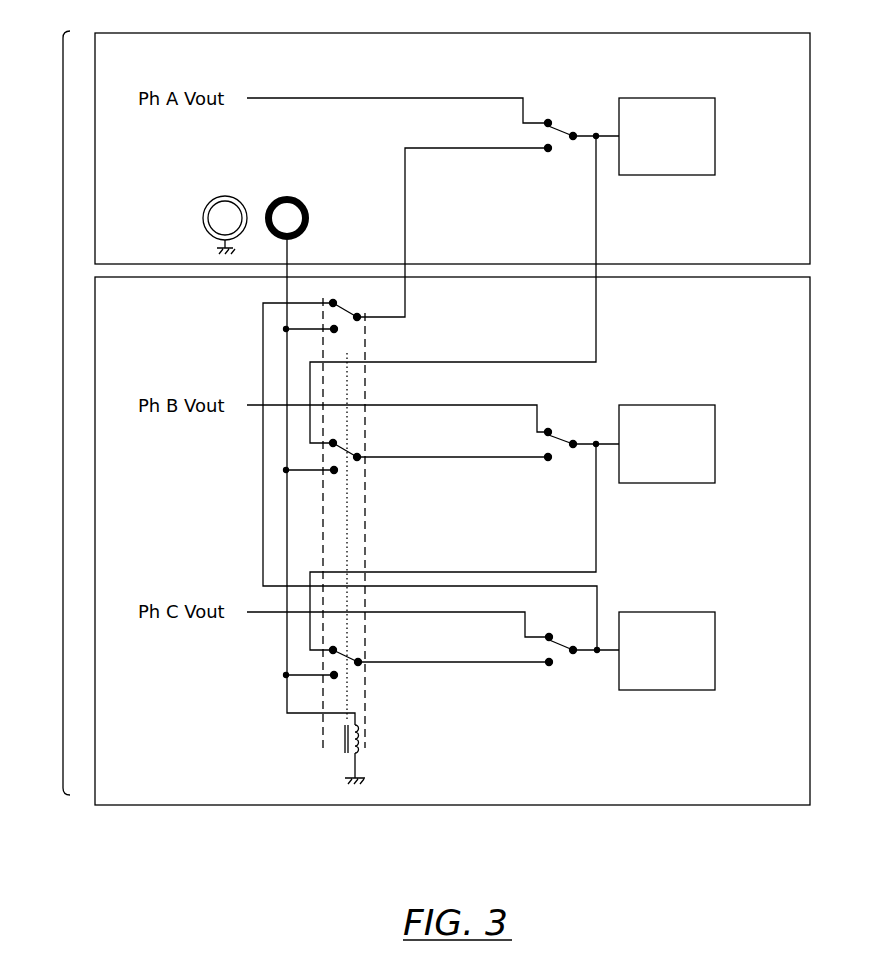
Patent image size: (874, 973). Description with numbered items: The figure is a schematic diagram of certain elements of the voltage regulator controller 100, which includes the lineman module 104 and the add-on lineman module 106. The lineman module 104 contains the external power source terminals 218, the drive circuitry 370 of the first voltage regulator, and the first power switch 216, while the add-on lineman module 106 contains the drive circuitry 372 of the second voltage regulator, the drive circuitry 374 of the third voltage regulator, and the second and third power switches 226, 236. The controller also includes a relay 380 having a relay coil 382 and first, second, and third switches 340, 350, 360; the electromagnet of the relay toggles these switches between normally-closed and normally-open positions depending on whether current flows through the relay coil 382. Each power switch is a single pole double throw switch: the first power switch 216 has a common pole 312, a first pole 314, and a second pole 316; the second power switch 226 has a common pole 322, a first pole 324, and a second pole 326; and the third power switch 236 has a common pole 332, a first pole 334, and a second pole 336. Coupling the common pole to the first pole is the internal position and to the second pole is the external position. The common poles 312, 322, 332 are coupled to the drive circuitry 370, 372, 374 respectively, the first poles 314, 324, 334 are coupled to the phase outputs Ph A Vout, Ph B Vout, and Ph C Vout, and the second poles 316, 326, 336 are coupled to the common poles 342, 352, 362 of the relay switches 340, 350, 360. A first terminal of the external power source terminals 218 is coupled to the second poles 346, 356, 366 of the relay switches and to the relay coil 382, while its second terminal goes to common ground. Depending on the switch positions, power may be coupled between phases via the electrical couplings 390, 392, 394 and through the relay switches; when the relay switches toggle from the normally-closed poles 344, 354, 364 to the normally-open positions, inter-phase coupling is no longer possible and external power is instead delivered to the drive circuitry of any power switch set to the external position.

The voltage regulator controller 100 is at (62, 403).
The lineman module 104 is at (748, 64).
The add-on lineman module 106 is at (738, 311).
The first power switch 216 is at (555, 131).
The external power source terminals 218 is at (265, 210).
The second power switch 226 is at (554, 440).
The third power switch 236 is at (549, 666).
The common pole 312 is at (574, 139).
The first pole 314 is at (546, 121).
The second pole 316 is at (546, 149).
The common pole 322 is at (574, 447).
The first pole 324 is at (549, 430).
The second pole 326 is at (546, 458).
The common pole 332 is at (574, 653).
The first pole 334 is at (550, 635).
The second pole 336 is at (547, 663).
The first switch 340 is at (354, 318).
The common pole 342 is at (358, 314).
The first pole 344 is at (332, 300).
The second pole 346 is at (332, 331).
The second switch 350 is at (354, 453).
The common pole 352 is at (360, 455).
The first pole 354 is at (340, 441).
The second pole 356 is at (332, 472).
The third switch 360 is at (355, 660).
The common pole 362 is at (361, 660).
The first pole 364 is at (340, 648).
The second pole 366 is at (332, 677).
The drive circuitry 370 is at (715, 160).
The drive circuitry 372 is at (715, 442).
The drive circuitry 374 is at (715, 650).
The relay 380 is at (322, 718).
The relay coil 382 is at (345, 737).
The electrical coupling 390 is at (596, 241).
The electrical coupling 392 is at (596, 546).
The electrical coupling 394 is at (262, 526).